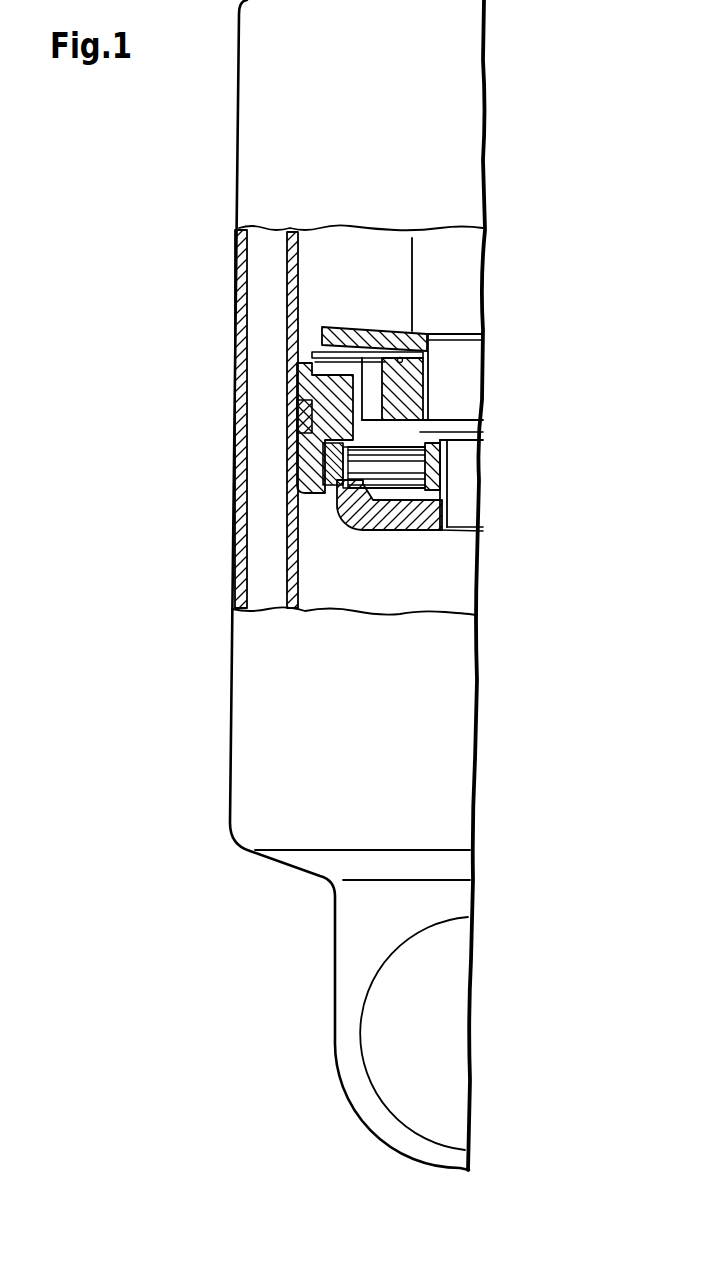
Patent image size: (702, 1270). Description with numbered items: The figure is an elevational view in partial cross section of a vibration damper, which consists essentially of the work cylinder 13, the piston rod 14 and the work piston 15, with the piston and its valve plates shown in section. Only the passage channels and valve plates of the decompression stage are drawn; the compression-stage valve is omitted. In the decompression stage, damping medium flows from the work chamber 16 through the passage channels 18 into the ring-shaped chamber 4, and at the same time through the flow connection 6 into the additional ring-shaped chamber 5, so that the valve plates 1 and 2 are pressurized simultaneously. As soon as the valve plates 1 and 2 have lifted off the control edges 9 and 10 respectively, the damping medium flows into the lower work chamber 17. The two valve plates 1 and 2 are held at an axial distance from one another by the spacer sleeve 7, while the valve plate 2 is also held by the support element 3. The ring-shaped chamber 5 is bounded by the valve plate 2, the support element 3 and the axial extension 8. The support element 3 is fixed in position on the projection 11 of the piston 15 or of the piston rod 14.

The valve plate 1 is at (325, 442).
The valve plate 2 is at (350, 528).
The support element 3 is at (436, 503).
The ring-shaped chamber 4 is at (397, 438).
The additional ring-shaped chamber 5 is at (443, 531).
The flow connection 6 is at (445, 466).
The spacer sleeve 7 is at (448, 481).
The axial extension 8 is at (347, 510).
The control edge 9 is at (325, 451).
The control edge 10 is at (340, 492).
The projection 11 is at (463, 515).
The work cylinder 13 is at (292, 269).
The piston rod 14 is at (466, 274).
The work piston 15 is at (402, 373).
The work chamber 16 is at (310, 302).
The lower work chamber 17 is at (430, 594).
The passage channels 18 is at (373, 398).